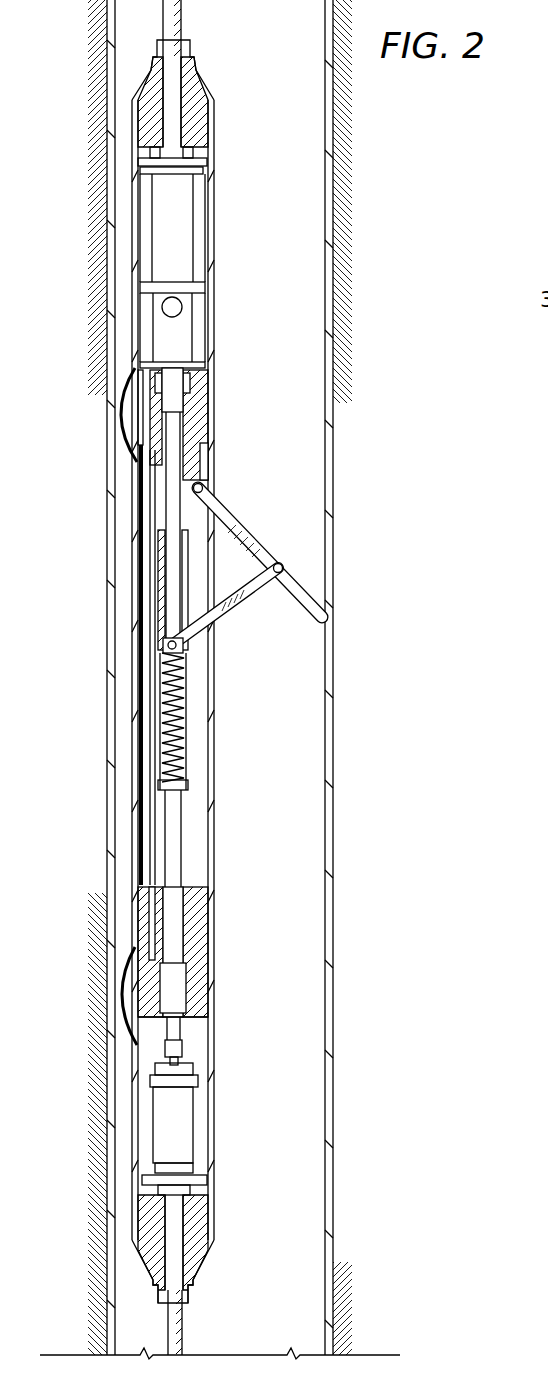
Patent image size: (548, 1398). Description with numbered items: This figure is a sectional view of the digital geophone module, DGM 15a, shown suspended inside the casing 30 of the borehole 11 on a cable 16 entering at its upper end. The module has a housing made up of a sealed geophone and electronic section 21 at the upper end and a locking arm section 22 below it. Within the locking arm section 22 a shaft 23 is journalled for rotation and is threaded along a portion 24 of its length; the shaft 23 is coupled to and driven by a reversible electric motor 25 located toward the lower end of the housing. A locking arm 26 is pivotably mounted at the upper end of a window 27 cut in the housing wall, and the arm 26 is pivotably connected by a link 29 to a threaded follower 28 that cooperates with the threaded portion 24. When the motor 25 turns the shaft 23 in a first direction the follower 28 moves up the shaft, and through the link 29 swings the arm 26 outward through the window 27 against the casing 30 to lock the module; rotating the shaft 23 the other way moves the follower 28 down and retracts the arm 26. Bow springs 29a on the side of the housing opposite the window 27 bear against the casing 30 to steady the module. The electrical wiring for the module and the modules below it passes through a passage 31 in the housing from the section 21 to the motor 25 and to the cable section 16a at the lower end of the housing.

The wellbore casing 11 is at (295, 128).
The digital geophone module (DGM) 15a is at (222, 132).
The wireline cable 16 is at (182, 16).
The cable section 16a is at (183, 1318).
The geophone and electronic section 21 is at (225, 272).
The locking arm section 22 is at (232, 705).
The shaft 23 is at (177, 465).
The threaded portion 24 is at (183, 735).
The reversible electric motor 25 is at (190, 1115).
The locking arm 26 is at (263, 547).
The window 27 is at (210, 808).
The threaded follower 28 is at (180, 648).
The link 29 is at (257, 598).
The bow springs 29a is at (118, 442).
The casing 30 is at (333, 443).
The passage 31 is at (140, 540).